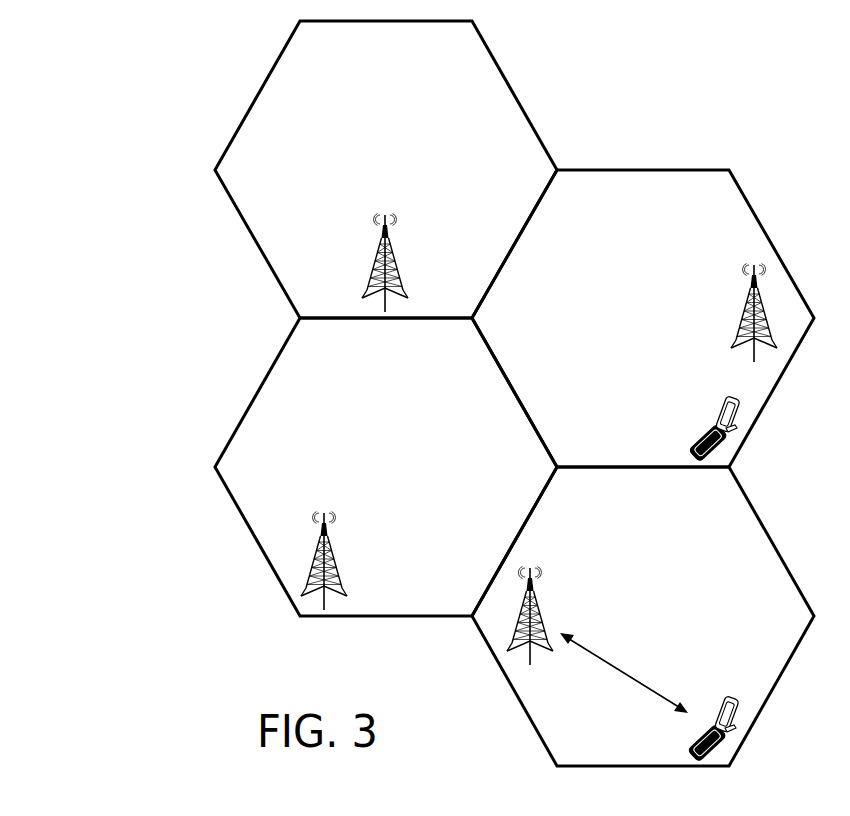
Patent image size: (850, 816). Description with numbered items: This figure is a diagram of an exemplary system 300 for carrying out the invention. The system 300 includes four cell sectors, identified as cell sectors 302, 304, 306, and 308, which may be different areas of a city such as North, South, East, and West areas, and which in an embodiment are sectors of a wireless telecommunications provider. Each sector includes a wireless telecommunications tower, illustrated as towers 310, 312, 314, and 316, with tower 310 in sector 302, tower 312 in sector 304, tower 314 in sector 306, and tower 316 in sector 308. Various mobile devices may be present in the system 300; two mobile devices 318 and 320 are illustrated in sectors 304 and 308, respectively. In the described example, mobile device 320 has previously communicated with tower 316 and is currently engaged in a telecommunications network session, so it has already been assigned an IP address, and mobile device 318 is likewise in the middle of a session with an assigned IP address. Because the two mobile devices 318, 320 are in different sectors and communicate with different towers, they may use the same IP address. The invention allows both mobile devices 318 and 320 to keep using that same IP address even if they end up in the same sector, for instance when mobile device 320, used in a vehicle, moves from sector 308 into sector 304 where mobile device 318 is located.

The system 300 is at (86, 94).
The cell sector 302 is at (266, 82).
The cell sector 304 is at (759, 222).
The cell sector 306 is at (265, 380).
The cell sector 308 is at (759, 522).
The wireless telecommunications tower 310 is at (371, 278).
The wireless telecommunications tower 312 is at (758, 292).
The wireless telecommunications tower 314 is at (310, 575).
The wireless telecommunications tower 316 is at (513, 625).
The mobile device 318 is at (724, 440).
The mobile device 320 is at (723, 740).